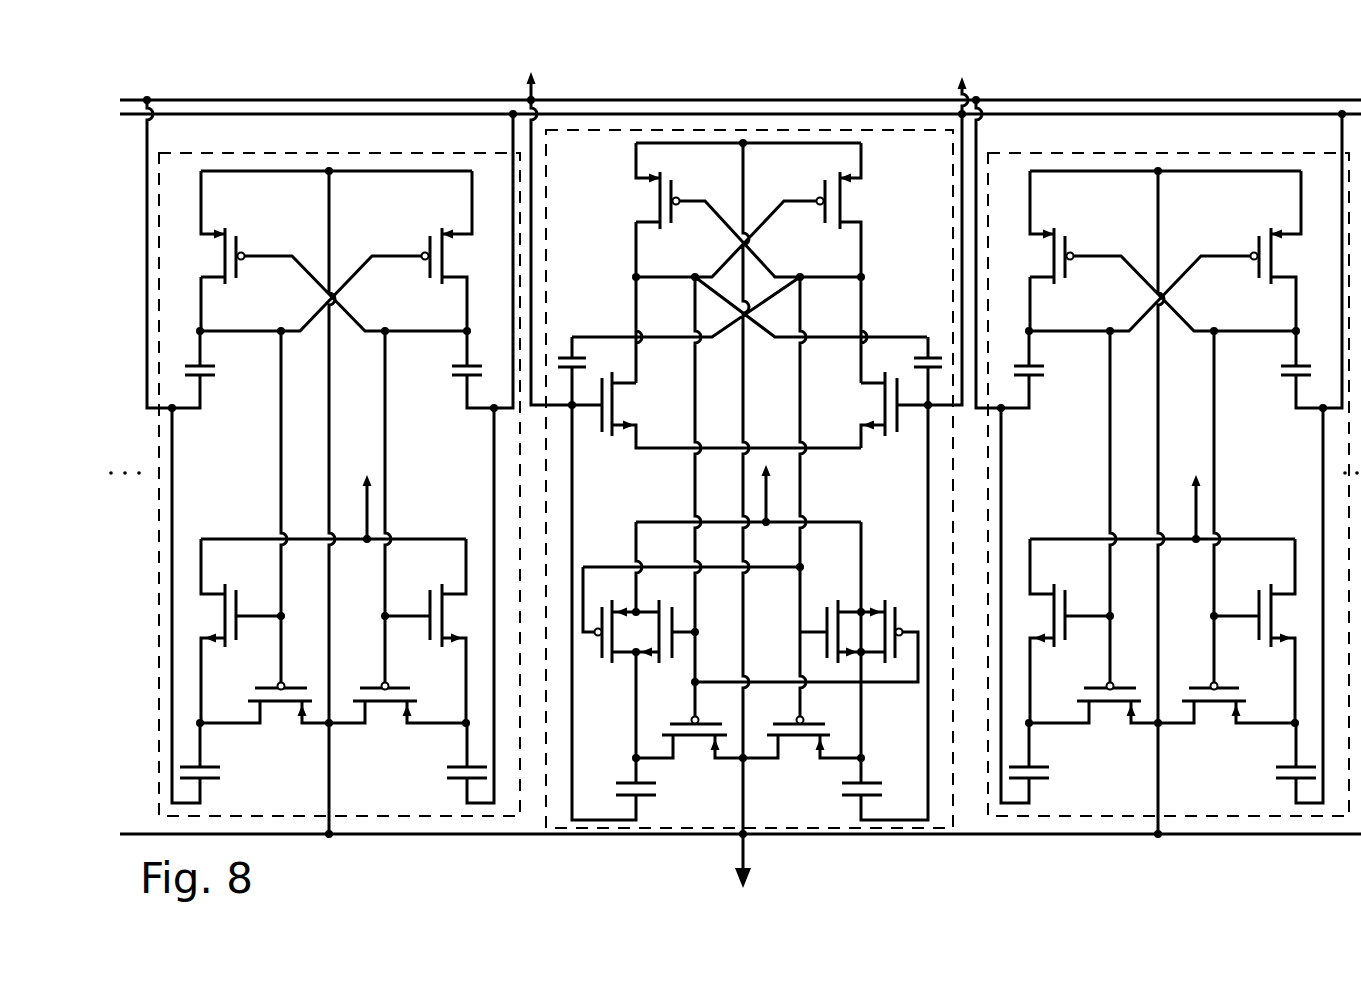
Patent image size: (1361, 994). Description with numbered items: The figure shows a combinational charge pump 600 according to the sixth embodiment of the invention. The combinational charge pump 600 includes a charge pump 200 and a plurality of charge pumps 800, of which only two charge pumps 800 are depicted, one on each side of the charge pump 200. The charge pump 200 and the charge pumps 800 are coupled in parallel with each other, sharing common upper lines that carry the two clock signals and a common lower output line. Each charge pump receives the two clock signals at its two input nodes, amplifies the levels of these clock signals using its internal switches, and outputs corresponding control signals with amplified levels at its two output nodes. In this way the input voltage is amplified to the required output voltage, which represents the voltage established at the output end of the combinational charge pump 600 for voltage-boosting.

The combinational charge pump 600 is at (1096, 92).
The charge pump 800 is at (443, 817).
The charge pump 200 is at (880, 829).